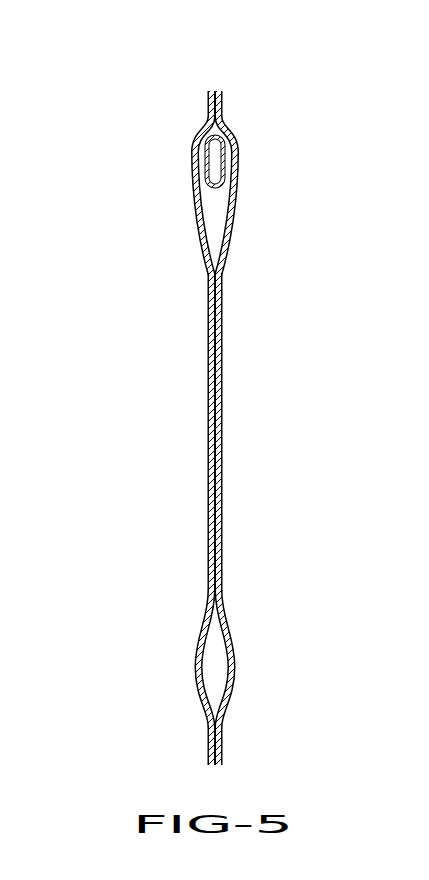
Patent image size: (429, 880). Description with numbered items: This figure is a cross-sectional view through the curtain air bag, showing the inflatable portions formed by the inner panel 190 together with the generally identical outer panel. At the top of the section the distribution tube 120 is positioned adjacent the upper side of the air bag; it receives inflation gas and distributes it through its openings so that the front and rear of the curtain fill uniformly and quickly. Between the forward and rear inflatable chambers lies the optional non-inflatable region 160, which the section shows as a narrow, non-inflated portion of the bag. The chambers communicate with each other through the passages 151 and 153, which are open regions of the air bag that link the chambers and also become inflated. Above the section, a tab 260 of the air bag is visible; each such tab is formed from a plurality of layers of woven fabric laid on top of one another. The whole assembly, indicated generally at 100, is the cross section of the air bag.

The suture anchor device 100 is at (219, 417).
The distribution tube 120 is at (215, 152).
The passage 151 is at (213, 214).
The passage 153 is at (200, 658).
The non-inflatable region 160 is at (222, 354).
The inner panel 190 is at (197, 645).
The tab 260 is at (209, 100).